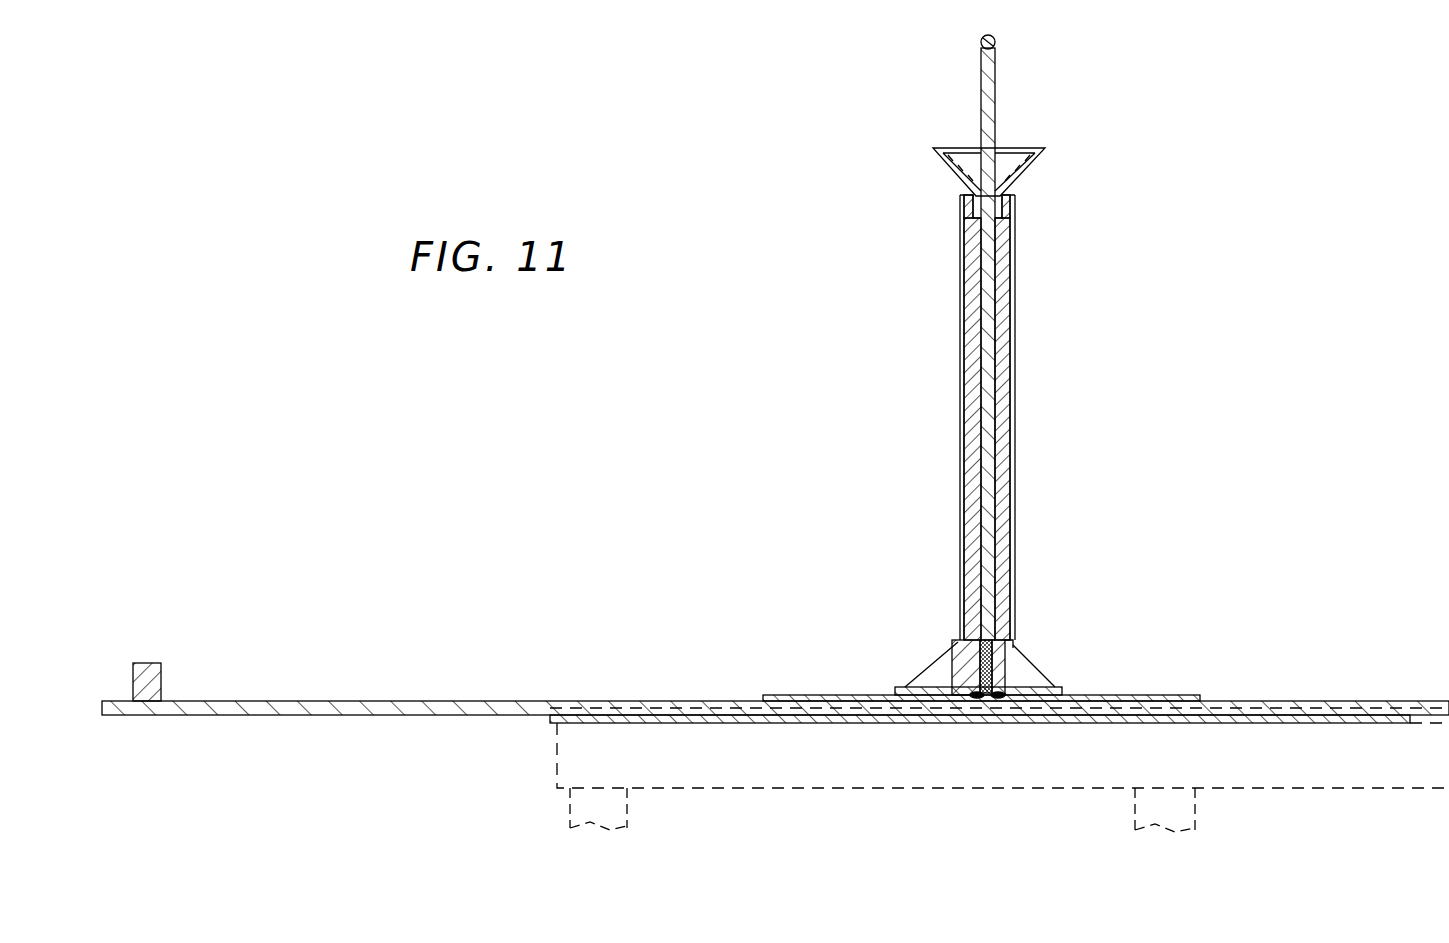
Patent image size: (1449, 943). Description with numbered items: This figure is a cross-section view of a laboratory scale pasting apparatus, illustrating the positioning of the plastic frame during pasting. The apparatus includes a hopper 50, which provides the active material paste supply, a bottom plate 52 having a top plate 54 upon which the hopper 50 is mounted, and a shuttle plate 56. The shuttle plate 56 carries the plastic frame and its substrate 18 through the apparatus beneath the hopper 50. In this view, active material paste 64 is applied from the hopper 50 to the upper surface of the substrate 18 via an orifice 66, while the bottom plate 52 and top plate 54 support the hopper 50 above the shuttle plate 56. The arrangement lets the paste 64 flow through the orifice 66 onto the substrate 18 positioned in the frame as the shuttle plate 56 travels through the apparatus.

The hopper 50 is at (908, 474).
The active material paste 64 is at (975, 665).
The top plate 54 is at (897, 688).
The substrate 18 is at (890, 697).
The orifice 66 is at (1003, 690).
The shuttle plate 56 is at (328, 717).
The bottom plate 52 is at (672, 722).